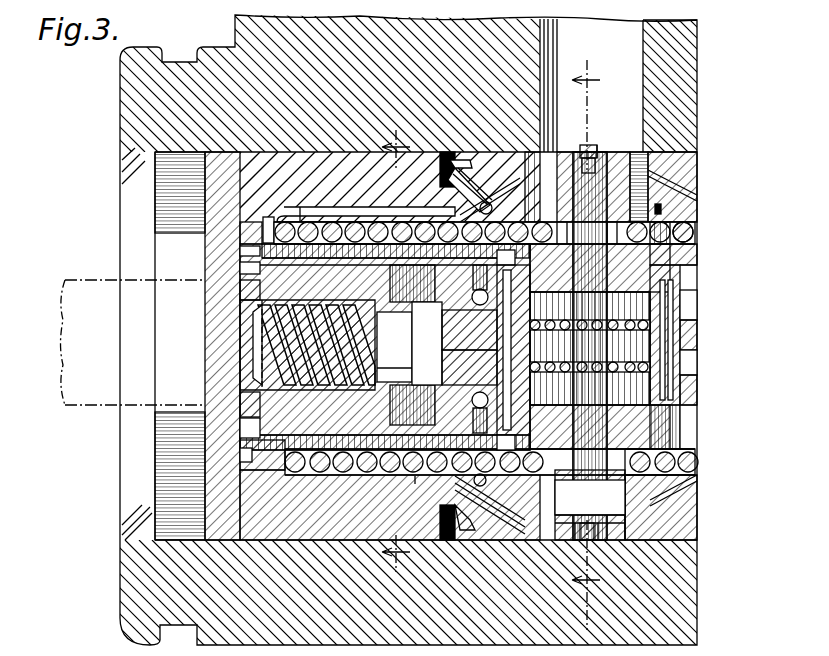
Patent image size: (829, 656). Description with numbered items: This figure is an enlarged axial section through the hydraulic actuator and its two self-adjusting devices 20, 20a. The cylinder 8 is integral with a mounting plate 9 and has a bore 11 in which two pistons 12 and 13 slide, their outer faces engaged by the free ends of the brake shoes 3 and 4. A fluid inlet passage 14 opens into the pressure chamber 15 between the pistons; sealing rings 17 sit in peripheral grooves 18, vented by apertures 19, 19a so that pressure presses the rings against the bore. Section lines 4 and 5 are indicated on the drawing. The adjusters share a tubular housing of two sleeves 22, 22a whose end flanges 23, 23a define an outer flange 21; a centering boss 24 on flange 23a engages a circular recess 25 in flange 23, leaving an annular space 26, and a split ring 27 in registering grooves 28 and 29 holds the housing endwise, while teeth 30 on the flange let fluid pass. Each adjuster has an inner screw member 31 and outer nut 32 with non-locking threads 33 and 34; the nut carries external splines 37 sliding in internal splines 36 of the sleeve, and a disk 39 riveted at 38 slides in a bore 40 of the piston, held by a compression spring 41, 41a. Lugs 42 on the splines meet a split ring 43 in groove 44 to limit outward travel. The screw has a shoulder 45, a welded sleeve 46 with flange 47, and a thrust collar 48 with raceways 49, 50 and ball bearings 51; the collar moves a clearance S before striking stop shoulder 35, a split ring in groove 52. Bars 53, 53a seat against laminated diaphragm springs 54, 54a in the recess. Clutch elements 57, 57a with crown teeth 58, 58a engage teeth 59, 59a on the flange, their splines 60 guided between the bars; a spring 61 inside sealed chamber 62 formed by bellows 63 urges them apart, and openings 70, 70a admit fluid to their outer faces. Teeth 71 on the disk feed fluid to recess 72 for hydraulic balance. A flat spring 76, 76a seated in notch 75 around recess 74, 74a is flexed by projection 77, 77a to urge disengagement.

The shoe 3 is at (64, 280).
The shoe 4 is at (396, 350).
The section line 5-5 / drive shaft axis 5 is at (586, 344).
The cylinder 8 is at (142, 573).
The mounting plate 9 is at (236, 30).
The bore 11 is at (160, 170).
The piston 12 is at (200, 192).
The piston 13 is at (700, 527).
The fluid inlet passage 14 is at (640, 73).
The pressure chamber 15 is at (540, 540).
The sealing ring 17 is at (462, 165).
The peripheral groove 18 is at (445, 152).
The aperture 19 is at (478, 188).
The aperture 19a is at (698, 496).
The self-adjusting device 20 is at (243, 318).
The self-adjusting device 20a is at (700, 428).
The outer peripheral flange 21 is at (598, 150).
The sleeve 22 is at (372, 207).
The sleeve 22a is at (672, 240).
The end flange 23 is at (540, 150).
The end flange 23a is at (690, 175).
The centering boss 24 is at (490, 200).
The circular recess 25 is at (500, 202).
The annular internal space 26 is at (665, 209).
The resilient split ring 27 is at (596, 145).
The annular groove 28 is at (582, 146).
The annular groove 29 is at (618, 160).
The teeth 30 is at (566, 540).
The inner screw member 31 is at (394, 347).
The outer screw member 32 is at (262, 298).
The non-locking thread 33 is at (262, 348).
The non-locking thread 34 is at (250, 400).
The stop shoulder 35 is at (484, 242).
The internal splines 36 is at (320, 222).
The external splines 37 is at (222, 346).
The riveting 38 is at (242, 420).
The disk 39 is at (250, 268).
The bore 40 is at (268, 476).
The coiled compression spring 41 is at (320, 476).
The coiled compression spring 41a is at (698, 462).
The stop lugs 42 is at (362, 486).
The resilient split ring 43 is at (246, 455).
The annular groove 44 is at (270, 218).
The shoulder 45 is at (430, 362).
The sleeve 46 is at (427, 343).
The outer peripheral flange 47 is at (469, 333).
The thrust collar 48 is at (425, 302).
The annular raceway 49 is at (511, 347).
The annular raceway 50 is at (471, 267).
The ball bearings 51 is at (466, 416).
The annular groove 52 is at (368, 436).
The bars 53 is at (600, 266).
The bars 53a is at (698, 256).
The laminated diaphragm spring 54 is at (560, 229).
The laminated diaphragm spring 54a is at (622, 236).
The clutch element 57 is at (423, 351).
The clutch element 57a is at (698, 385).
The crown teeth 58 is at (584, 495).
The crown teeth 58a is at (622, 486).
The crown teeth 59 is at (368, 355).
The crown teeth 59a is at (698, 280).
The splines 60 is at (600, 427).
The coiled compression spring 61 is at (593, 348).
The hermetically sealed chamber 62 is at (682, 315).
The corrugated cylindrical bellows 63 is at (690, 295).
The opening 70 is at (492, 483).
The opening 70a is at (697, 225).
The peripheral teeth 71 is at (262, 222).
The recess 72 is at (240, 250).
The central recess 74 is at (473, 398).
The central recess 74a is at (690, 330).
The annular notch 75 is at (472, 297).
The flat spring 76 is at (516, 350).
The flat spring 76a is at (695, 362).
The axial projection 77 is at (469, 365).
The axial projection 77a is at (690, 347).
The predetermined braking clearance S is at (415, 478).